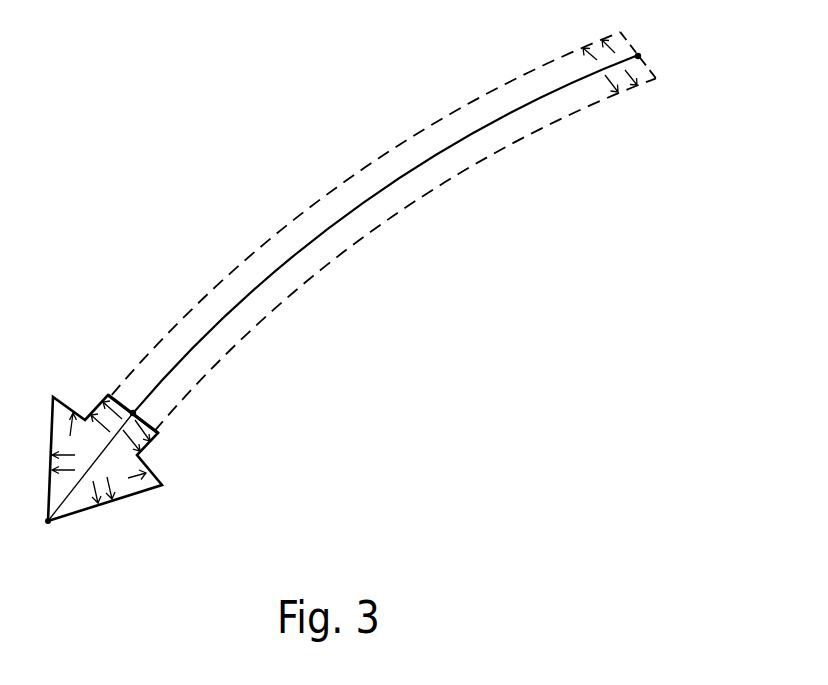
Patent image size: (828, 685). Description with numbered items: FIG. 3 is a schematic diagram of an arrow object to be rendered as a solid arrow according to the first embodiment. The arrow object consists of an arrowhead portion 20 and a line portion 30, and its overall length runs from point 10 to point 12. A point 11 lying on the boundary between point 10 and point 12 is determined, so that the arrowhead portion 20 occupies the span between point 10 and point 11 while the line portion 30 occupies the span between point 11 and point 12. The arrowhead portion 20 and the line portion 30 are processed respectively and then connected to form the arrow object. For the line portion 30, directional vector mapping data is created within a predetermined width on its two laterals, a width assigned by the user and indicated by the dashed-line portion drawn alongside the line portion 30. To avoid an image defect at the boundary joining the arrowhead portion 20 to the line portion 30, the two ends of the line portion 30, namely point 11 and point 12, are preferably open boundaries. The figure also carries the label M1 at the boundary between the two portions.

The point 10 is at (48, 521).
The point on the boundary 11 is at (133, 413).
The point 12 is at (638, 56).
The arrowhead portion 20 is at (122, 500).
The line portion 30 is at (398, 211).
The tail bar M1 is at (108, 393).